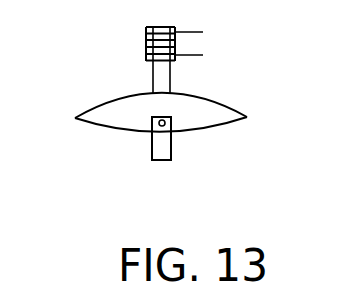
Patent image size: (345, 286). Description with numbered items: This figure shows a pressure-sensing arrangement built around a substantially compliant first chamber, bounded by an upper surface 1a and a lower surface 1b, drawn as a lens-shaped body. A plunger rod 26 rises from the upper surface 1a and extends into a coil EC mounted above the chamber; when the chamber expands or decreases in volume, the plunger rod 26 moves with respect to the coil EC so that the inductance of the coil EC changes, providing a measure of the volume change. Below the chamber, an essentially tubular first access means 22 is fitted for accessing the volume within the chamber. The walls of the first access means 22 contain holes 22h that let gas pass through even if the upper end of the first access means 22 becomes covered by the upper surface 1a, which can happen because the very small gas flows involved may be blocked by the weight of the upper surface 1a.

The upper surface of substantially compliant first chamber 1a is at (228, 104).
The lower surface of substantially compliant first chamber 1b is at (232, 128).
The plunger rod 26 is at (152, 82).
The coil EC is at (186, 43).
The first access means 22 is at (151, 161).
The holes 22h is at (166, 127).